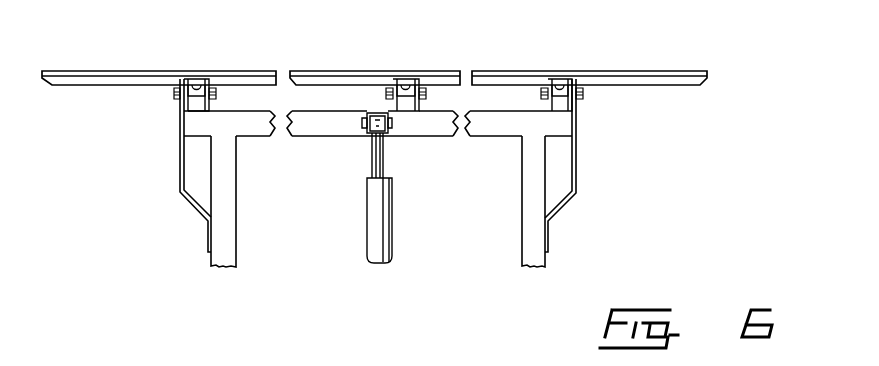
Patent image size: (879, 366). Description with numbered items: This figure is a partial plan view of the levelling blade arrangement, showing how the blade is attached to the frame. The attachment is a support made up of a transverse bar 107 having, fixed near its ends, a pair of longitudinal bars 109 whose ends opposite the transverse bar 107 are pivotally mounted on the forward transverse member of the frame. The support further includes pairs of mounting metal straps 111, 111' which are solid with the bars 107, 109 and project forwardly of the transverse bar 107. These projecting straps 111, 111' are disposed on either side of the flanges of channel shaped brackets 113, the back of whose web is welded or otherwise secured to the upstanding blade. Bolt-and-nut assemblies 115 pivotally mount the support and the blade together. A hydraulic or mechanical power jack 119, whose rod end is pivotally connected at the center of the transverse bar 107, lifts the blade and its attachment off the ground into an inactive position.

The transverse bar 107 is at (406, 127).
The longitudinal bars 109 is at (227, 249).
The mounting metal strap 111 is at (368, 165).
The mounting metal strap 111' is at (378, 75).
The channel shaped bracket 113 is at (214, 48).
The bolt-and-nut assembly 115 is at (176, 96).
The power jack 119 is at (373, 250).